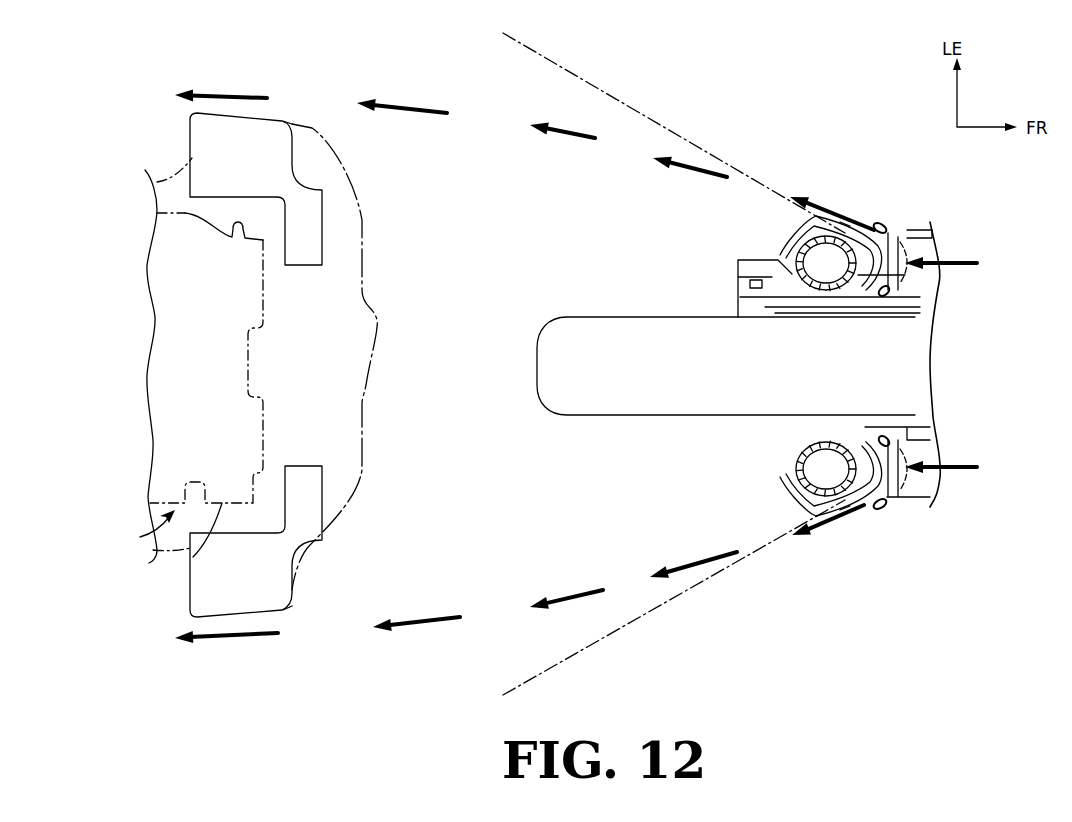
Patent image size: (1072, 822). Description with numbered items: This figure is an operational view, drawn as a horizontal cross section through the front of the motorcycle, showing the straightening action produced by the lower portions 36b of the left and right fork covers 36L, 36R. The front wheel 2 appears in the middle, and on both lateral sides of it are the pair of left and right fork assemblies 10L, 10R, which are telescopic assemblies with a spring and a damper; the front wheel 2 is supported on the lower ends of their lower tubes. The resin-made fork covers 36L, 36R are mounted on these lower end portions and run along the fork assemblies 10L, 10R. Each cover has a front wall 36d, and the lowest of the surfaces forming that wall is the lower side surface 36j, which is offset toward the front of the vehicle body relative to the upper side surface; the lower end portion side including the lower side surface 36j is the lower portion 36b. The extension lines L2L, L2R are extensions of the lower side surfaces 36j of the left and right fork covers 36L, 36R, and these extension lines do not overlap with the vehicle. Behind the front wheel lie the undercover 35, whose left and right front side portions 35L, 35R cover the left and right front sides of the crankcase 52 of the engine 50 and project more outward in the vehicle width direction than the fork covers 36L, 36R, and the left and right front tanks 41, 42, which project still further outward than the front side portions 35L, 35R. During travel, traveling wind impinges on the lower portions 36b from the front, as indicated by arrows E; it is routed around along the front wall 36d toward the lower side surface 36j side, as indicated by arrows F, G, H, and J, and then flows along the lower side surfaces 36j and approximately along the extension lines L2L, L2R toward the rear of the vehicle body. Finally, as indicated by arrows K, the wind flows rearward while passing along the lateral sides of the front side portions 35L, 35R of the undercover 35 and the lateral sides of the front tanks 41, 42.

The front wheel 2 is at (910, 360).
The left fork assembly 10L is at (832, 292).
The right fork assembly 10R is at (820, 442).
The undercover 35 is at (313, 128).
The left front side portion 35L is at (290, 120).
The right front side portion 35R is at (268, 608).
The left fork cover 36L is at (873, 224).
The right fork cover 36R is at (873, 510).
The lower portion 36b is at (850, 513).
The front wall 36d is at (890, 452).
The lower side surface 36j is at (840, 517).
The left front tank 41 is at (198, 147).
The right front tank 42 is at (203, 588).
The engine 50 is at (140, 537).
The crankcase 52 is at (193, 557).
The extension line L2L is at (660, 128).
The extension line L2R is at (652, 610).
The arrows E is at (941, 355).
The arrows F is at (829, 367).
The arrows G is at (693, 367).
The arrows H is at (566, 365).
The arrows J is at (408, 373).
The arrows K is at (226, 368).